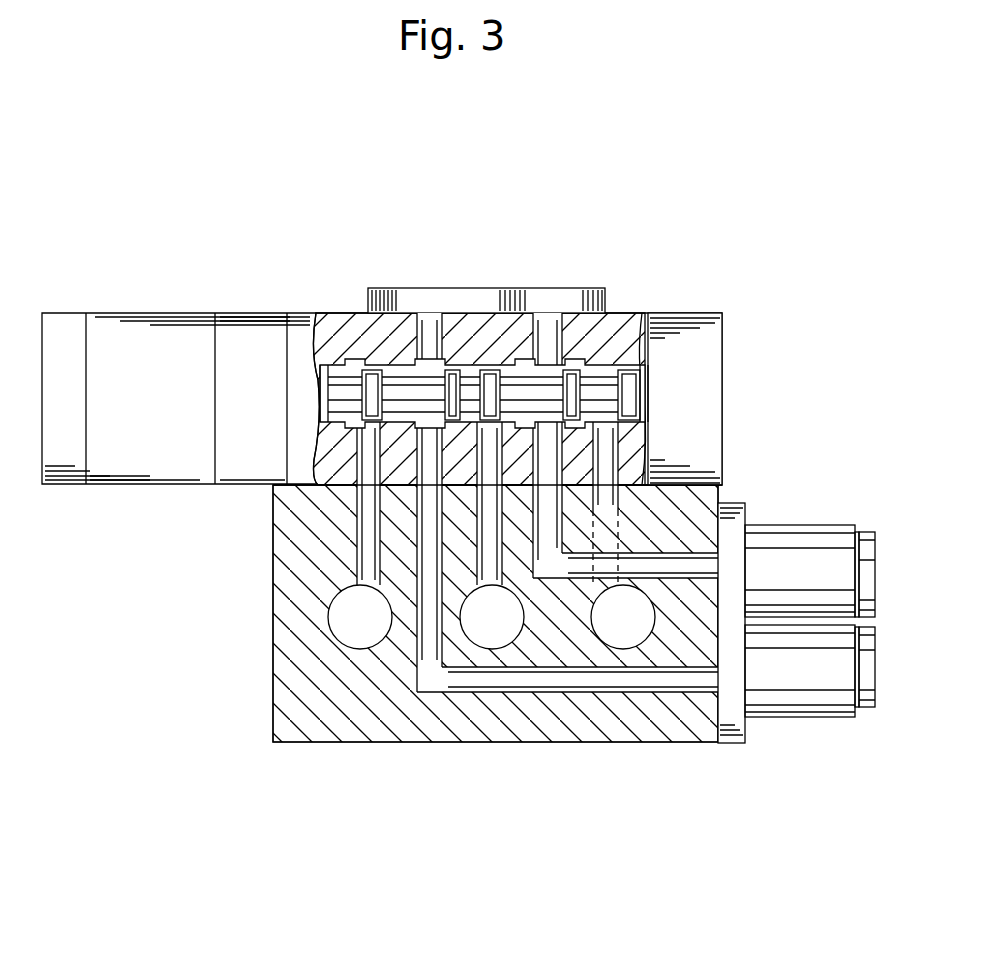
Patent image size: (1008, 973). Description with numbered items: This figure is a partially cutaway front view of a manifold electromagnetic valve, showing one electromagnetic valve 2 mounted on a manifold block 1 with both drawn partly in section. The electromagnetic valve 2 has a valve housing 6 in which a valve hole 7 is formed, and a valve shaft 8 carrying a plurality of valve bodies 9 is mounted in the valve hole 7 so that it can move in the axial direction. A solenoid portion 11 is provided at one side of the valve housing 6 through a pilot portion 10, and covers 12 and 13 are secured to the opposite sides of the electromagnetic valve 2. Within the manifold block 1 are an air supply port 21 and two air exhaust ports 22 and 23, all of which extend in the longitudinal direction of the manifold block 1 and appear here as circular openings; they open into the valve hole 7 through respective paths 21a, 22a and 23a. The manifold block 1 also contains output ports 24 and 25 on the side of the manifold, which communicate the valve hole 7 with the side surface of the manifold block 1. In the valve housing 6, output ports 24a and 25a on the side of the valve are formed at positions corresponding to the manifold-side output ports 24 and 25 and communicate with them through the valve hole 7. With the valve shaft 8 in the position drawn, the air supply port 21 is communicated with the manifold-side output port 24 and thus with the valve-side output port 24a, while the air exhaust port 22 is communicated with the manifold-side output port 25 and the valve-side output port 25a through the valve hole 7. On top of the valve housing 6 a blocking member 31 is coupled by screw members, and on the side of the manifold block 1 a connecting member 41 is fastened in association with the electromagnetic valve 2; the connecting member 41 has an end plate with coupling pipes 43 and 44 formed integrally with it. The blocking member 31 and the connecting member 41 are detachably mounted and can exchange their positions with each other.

The manifold block 1 is at (246, 650).
The electromagnetic valve 2 is at (670, 338).
The valve housing 6 is at (615, 328).
The valve hole 7 is at (397, 365).
The valve shaft 8 is at (340, 390).
The valve body 9 is at (495, 355).
The pilot portion 10 is at (232, 472).
The solenoid portion 11 is at (145, 472).
The cover 12 is at (67, 472).
The cover 13 is at (708, 412).
The air supply port 21 is at (492, 632).
The path 21a is at (487, 462).
The air exhaust port 22 is at (360, 633).
The path 22a is at (368, 457).
The air exhaust port 23 is at (627, 628).
The path 23a is at (608, 453).
The output port on the side of the manifold 24 is at (692, 553).
The output port on the side of the valve 24a is at (548, 378).
The output port on the side of the manifold 25 is at (688, 680).
The output port on the side of the valve 25a is at (433, 345).
The blocking member 31 is at (470, 302).
The connecting member 41 is at (748, 742).
The coupling pipe 43 is at (840, 545).
The coupling pipe 44 is at (833, 690).